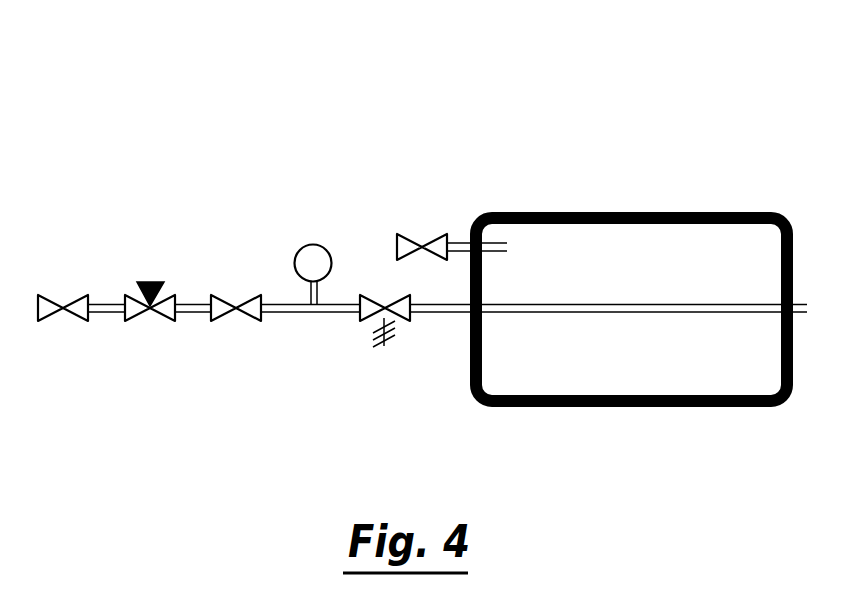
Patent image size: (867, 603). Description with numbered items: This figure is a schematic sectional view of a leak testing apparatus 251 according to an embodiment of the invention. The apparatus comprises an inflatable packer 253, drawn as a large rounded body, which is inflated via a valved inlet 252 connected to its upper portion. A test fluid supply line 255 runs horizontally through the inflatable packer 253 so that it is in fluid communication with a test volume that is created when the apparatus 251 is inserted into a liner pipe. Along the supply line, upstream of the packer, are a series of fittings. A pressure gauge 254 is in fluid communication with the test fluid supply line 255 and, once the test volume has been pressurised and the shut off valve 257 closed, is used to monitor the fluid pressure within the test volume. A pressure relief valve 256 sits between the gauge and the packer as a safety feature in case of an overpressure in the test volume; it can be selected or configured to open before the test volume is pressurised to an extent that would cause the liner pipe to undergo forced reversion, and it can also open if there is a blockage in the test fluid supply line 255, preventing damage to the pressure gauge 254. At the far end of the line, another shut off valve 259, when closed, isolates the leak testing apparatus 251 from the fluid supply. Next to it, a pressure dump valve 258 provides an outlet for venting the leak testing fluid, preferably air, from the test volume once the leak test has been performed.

The leak testing apparatus 251 is at (480, 133).
The valved inlet 252 is at (462, 243).
The inflatable packer 253 is at (633, 212).
The pressure gauge 254 is at (310, 245).
The test fluid supply line 255 is at (538, 312).
The pressure relief valve 256 is at (368, 320).
The shut off valve 257 is at (218, 320).
The pressure dump valve 258 is at (152, 282).
The shut off valve 259 is at (77, 320).